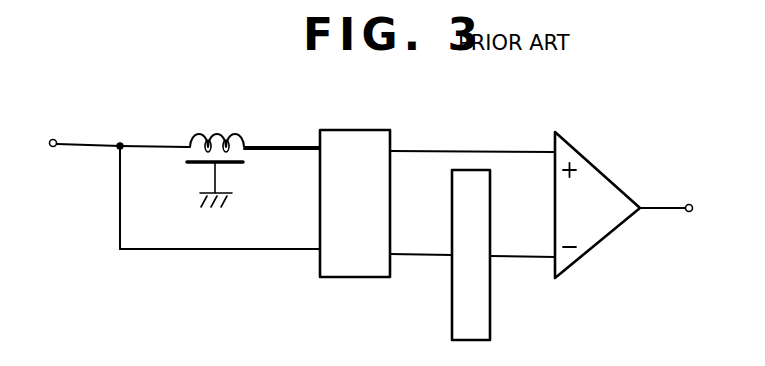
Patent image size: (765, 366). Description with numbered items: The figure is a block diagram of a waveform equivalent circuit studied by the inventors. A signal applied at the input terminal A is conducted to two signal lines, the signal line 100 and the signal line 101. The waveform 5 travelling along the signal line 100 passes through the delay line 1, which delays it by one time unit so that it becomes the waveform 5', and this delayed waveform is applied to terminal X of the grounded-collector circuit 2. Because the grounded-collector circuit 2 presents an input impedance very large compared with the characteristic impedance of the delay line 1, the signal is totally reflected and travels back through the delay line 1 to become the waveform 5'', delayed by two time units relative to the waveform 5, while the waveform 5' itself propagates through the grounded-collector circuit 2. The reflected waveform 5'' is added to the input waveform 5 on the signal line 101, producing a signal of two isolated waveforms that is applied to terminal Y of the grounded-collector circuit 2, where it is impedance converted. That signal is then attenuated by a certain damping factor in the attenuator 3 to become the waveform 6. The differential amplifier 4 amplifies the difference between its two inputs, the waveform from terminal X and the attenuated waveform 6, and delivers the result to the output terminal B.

The input terminal A is at (52, 139).
The output terminal B is at (689, 204).
The delay line 1 is at (212, 134).
The grounded-collector circuit 2 is at (380, 130).
The attenuator 3 is at (490, 294).
The differential amplifier 4 is at (598, 166).
The waveform 5 is at (247, 207).
The waveform 5' is at (375, 151).
The waveform 5'' is at (154, 190).
The waveform 6 is at (521, 247).
The signal line 100 is at (277, 147).
The signal line 101 is at (170, 251).